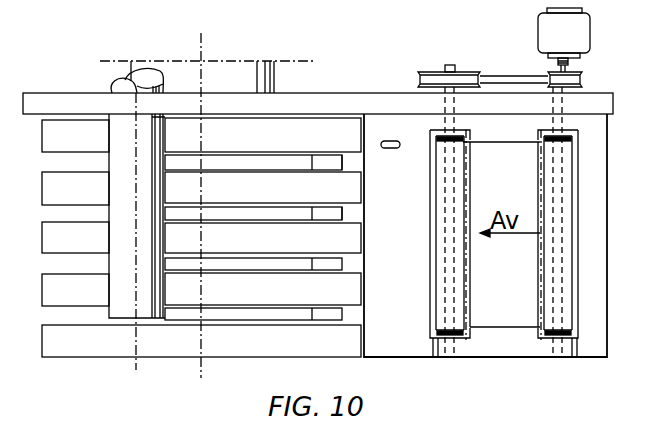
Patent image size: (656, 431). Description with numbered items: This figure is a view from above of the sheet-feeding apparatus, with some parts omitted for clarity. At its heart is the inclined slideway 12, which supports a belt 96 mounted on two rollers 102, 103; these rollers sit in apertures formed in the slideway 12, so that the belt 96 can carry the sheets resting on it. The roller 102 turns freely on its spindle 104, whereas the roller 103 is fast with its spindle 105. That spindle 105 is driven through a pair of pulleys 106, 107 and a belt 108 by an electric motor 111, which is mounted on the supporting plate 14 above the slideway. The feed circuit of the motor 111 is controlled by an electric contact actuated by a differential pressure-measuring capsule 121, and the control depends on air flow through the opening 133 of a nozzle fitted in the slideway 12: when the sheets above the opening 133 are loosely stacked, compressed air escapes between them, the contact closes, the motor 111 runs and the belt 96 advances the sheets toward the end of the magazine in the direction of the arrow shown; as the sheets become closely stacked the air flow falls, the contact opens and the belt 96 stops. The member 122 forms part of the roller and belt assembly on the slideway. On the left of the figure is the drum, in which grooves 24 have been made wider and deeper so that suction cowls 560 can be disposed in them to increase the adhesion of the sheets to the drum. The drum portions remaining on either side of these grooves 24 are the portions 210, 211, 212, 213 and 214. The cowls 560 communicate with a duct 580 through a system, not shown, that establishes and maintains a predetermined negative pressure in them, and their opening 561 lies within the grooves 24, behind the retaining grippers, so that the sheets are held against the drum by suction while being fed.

The inclined slideway 12 is at (415, 348).
The support plate 14 is at (600, 104).
The grooves 24 is at (349, 215).
The belt 96 is at (512, 288).
The roller 102 is at (540, 142).
The roller 103 is at (461, 141).
The spindle 104 is at (552, 128).
The spindle 105 is at (452, 125).
The pulley 106 is at (432, 72).
The pulley 107 is at (580, 84).
The belt 108 is at (500, 76).
The electric motor 111 is at (552, 27).
The differential pressure-measuring capsule 121 is at (545, 335).
The roller 122 is at (430, 291).
The opening 133 is at (393, 141).
The drum portion 210 is at (258, 146).
The tray 211 is at (241, 201).
The tray 212 is at (262, 251).
The tray 213 is at (262, 301).
The drum portion 214 is at (260, 353).
The suction cowls 560 is at (195, 213).
The opening 561 is at (323, 217).
The duct 580 is at (121, 93).